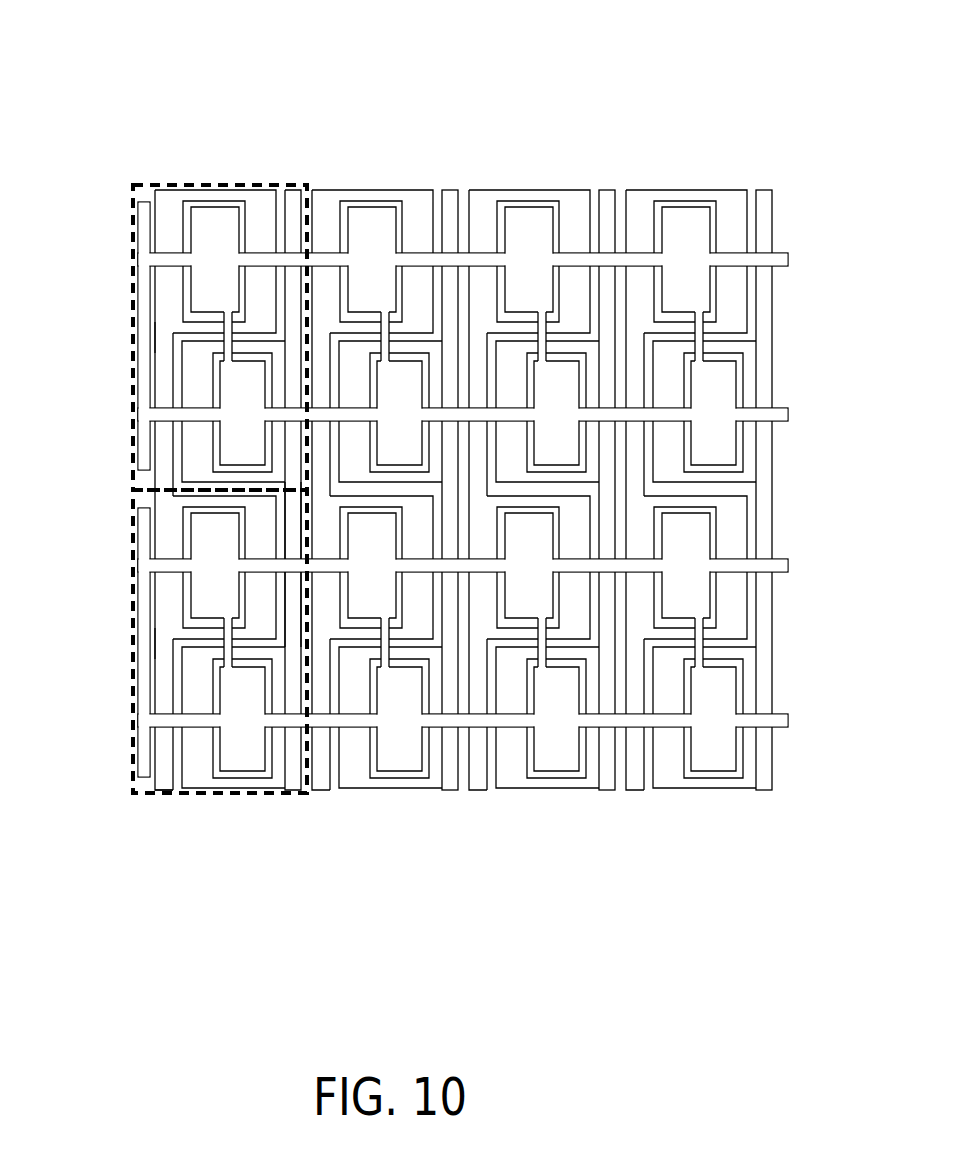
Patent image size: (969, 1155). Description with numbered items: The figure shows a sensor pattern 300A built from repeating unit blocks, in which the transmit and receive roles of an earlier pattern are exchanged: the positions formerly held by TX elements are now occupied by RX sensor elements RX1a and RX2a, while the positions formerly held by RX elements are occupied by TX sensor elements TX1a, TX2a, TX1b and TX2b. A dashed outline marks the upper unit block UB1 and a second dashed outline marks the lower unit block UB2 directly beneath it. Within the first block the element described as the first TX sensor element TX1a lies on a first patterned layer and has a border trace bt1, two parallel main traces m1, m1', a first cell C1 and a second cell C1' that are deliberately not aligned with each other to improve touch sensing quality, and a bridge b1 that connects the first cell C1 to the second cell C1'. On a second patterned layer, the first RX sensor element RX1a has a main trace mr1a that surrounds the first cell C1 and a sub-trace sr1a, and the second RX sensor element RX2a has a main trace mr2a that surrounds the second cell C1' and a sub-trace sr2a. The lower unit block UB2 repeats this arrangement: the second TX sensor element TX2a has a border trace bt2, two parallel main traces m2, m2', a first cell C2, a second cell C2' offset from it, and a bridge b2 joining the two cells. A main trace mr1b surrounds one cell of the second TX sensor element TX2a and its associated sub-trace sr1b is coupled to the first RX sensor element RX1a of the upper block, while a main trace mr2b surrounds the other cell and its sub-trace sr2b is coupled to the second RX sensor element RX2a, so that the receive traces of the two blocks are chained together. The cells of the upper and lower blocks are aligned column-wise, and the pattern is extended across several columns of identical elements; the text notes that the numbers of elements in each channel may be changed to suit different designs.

The sensor pattern 300A is at (603, 103).
The first TX sensor element TX1a is at (162, 185).
The TX sensor element TX1b is at (163, 793).
The second TX sensor element TX2a is at (290, 188).
The TX sensor element TX2b is at (295, 791).
The first RX sensor element RX1a is at (147, 202).
The second RX sensor element RX2a is at (142, 790).
The unit block UB1 is at (210, 185).
The unit block UB2 is at (212, 793).
The first cell C1 is at (215, 259).
The second cell C1' is at (242, 413).
The first cell C2 is at (215, 565).
The second cell C2' is at (242, 719).
The bridge b1 is at (232, 327).
The bridge b2 is at (233, 654).
The main trace m1 is at (415, 273).
The main trace m1' is at (411, 432).
The main trace m2 is at (415, 580).
The main trace m2' is at (411, 739).
The main trace mr1a is at (167, 227).
The main trace mr1b is at (167, 533).
The main trace mr2a is at (287, 377).
The main trace mr2b is at (285, 678).
The sub-trace sr1a is at (167, 378).
The sub-trace sr1b is at (167, 685).
The sub-trace sr2a is at (297, 527).
The sub-trace sr2b is at (293, 622).
The border trace bt1 is at (140, 335).
The border trace bt2 is at (140, 640).